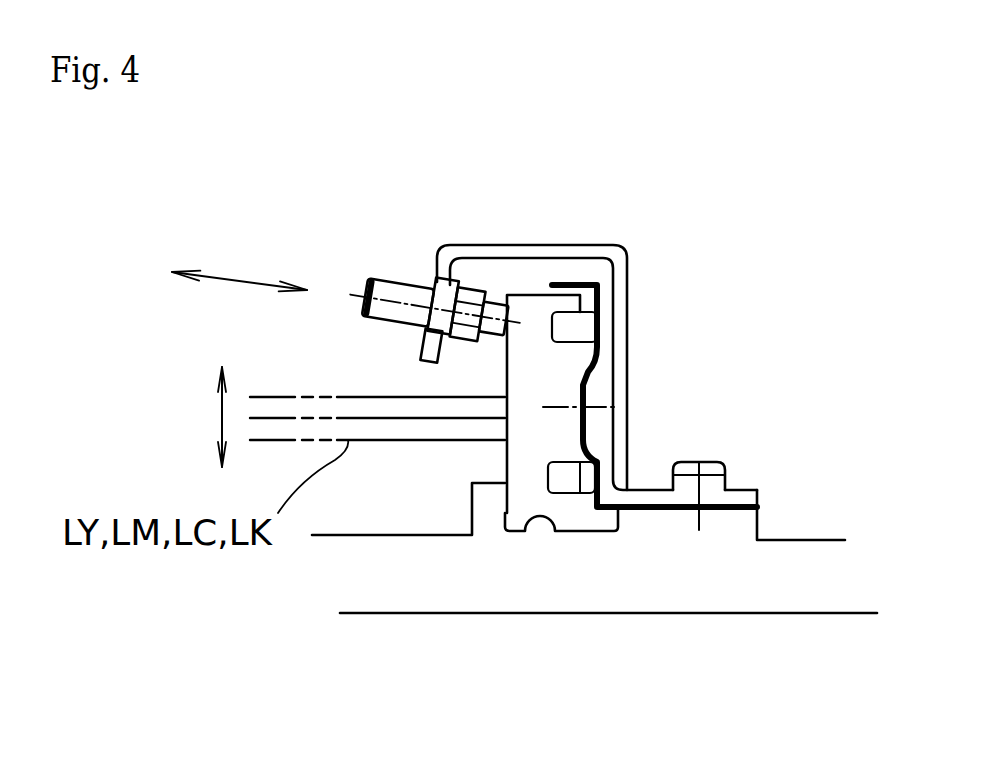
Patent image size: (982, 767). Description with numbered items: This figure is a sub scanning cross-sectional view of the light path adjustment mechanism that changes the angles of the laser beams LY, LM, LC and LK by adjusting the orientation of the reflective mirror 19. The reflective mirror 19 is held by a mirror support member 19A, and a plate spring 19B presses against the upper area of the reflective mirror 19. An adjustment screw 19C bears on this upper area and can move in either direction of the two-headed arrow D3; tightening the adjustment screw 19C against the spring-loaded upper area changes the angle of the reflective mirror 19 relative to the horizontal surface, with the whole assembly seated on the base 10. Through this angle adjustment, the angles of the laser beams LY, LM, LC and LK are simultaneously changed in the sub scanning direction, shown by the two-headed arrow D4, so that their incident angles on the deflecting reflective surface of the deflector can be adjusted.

The base / housing 10 is at (803, 596).
The reflective mirror 19 is at (540, 367).
The mirror support member 19A is at (618, 438).
The plate spring 19B is at (595, 370).
The adjustment screw 19C is at (392, 277).
The two-headed arrow D3 is at (230, 272).
The two-headed arrow D4 is at (222, 412).